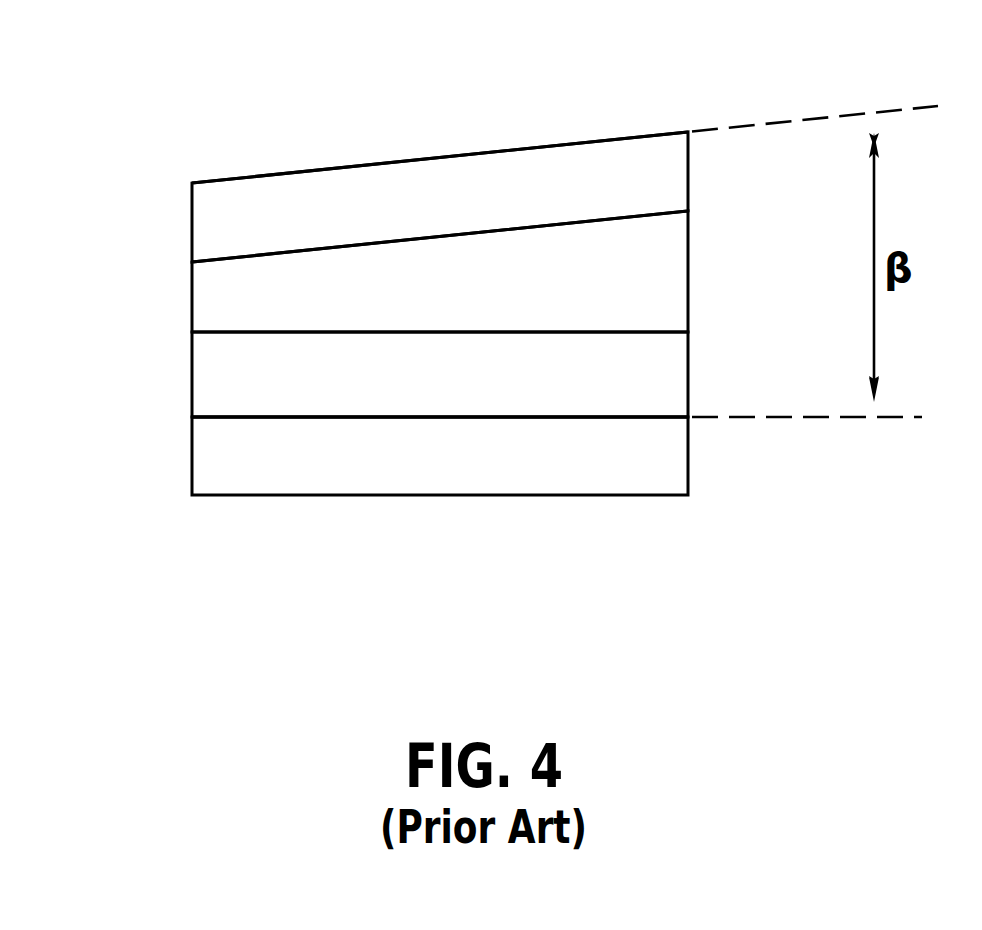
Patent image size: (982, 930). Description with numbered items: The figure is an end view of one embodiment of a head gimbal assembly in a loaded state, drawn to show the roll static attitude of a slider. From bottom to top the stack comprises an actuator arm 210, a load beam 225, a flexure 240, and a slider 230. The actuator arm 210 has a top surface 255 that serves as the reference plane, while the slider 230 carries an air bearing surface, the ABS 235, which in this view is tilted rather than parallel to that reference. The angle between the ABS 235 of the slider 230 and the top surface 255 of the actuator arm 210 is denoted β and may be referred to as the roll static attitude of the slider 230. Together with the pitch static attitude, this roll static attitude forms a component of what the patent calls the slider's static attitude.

The actuator arm 210 is at (170, 468).
The load beam 225 is at (170, 401).
The slider 230 is at (168, 220).
The ABS 235 is at (424, 145).
The flexure 240 is at (170, 293).
The top surface 255 is at (519, 396).